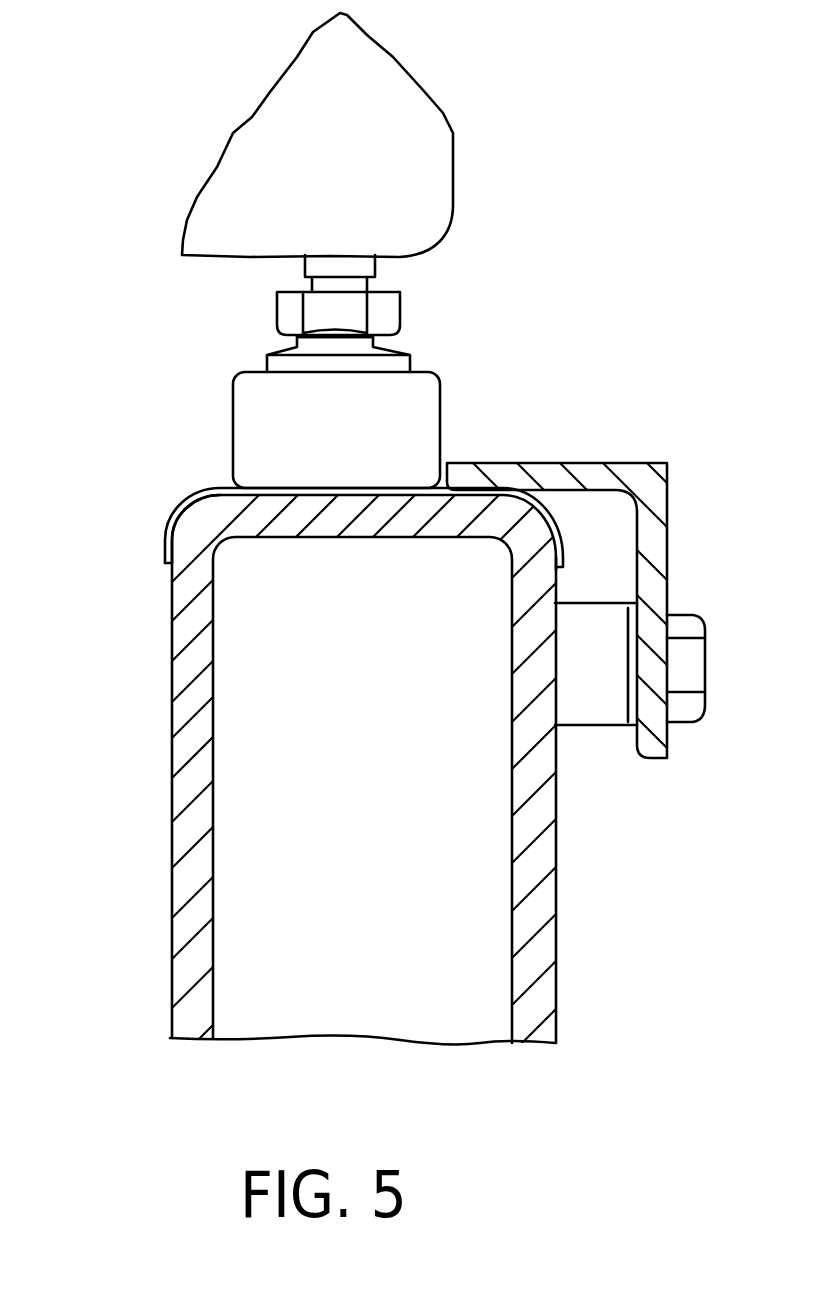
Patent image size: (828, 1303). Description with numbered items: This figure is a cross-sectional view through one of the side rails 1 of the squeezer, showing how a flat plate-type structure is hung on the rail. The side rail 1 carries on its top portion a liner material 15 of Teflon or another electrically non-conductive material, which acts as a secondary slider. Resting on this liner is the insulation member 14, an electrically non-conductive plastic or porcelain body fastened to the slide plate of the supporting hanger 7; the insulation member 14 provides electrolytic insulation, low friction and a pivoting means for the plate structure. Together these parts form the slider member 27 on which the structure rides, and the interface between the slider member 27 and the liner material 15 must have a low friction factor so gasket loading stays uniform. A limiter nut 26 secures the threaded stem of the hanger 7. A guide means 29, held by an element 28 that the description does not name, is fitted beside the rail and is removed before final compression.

The side rail 1 is at (538, 948).
The supporting hanger 7 is at (442, 137).
The insulation member 14 is at (420, 432).
The liner material 15 is at (165, 535).
The limiter nut 26 is at (388, 308).
The slider member 27 is at (135, 260).
The bolt 28 is at (688, 702).
The guide means 29 is at (657, 573).